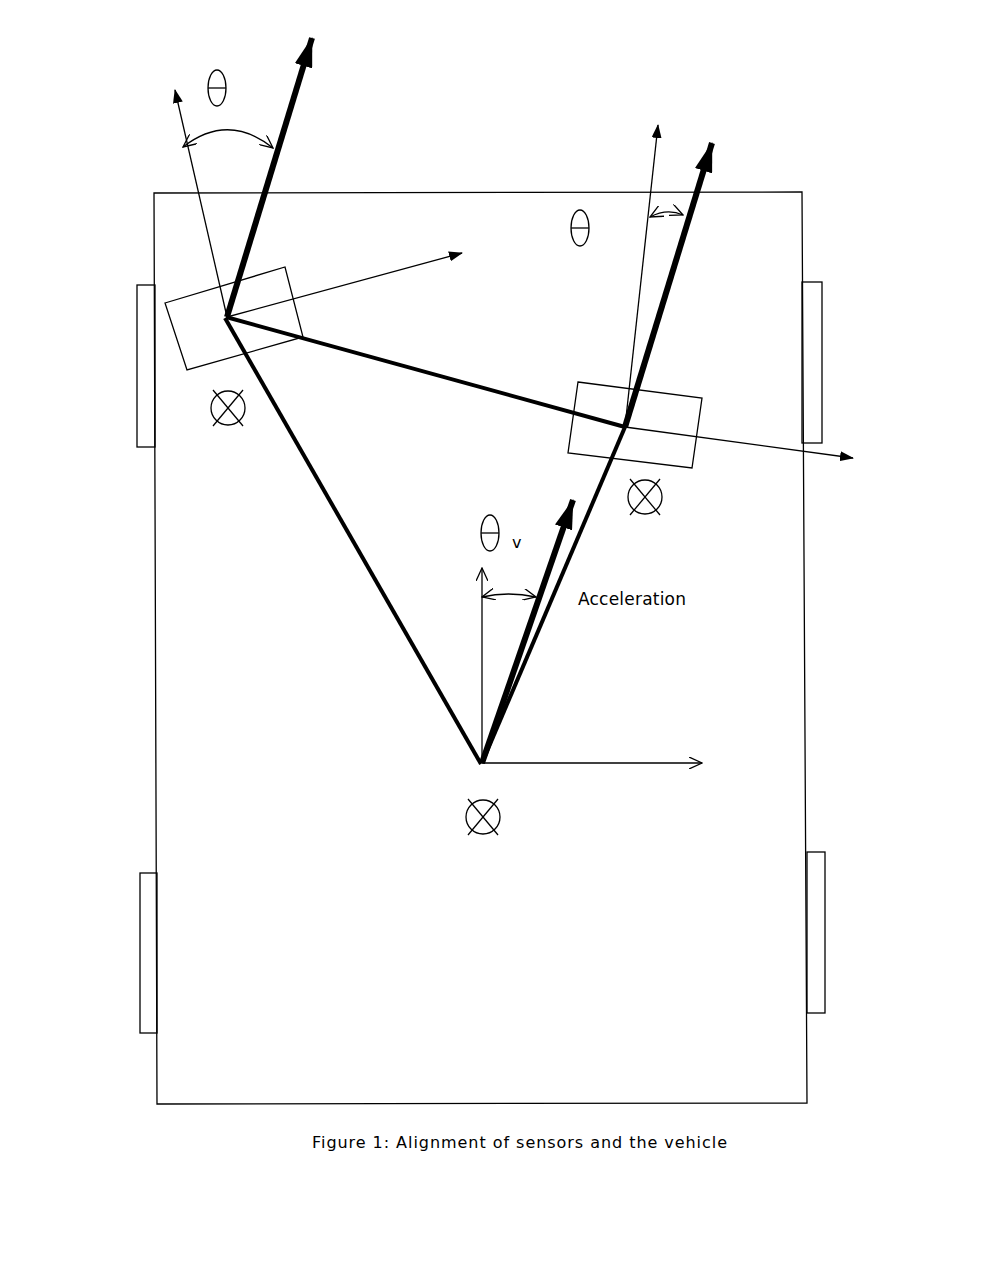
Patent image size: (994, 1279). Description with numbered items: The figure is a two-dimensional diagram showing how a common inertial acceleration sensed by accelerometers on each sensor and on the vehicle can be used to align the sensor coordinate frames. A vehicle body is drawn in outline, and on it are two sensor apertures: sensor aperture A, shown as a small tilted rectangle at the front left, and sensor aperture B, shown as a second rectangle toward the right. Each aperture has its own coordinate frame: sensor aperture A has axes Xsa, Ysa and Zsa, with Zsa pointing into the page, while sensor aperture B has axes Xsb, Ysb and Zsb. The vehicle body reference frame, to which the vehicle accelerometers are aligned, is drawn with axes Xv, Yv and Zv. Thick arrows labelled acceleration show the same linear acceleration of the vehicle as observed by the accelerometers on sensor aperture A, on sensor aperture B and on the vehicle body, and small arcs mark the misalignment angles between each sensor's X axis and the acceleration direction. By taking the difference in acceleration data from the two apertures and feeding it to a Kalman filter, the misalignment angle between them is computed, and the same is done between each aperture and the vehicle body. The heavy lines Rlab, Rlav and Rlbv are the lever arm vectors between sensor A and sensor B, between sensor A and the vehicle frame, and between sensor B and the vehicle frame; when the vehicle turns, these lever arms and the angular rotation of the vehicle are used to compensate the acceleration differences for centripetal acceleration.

The sensor aperture A is at (253, 255).
The sensor aperture B is at (723, 342).
The X axis of sensor aperture A frame Xsa is at (169, 203).
The Y axis of sensor aperture A frame Ysa is at (344, 275).
The Z axis of sensor aperture A frame Zsa is at (227, 431).
The X axis of sensor aperture B frame Xsb is at (631, 276).
The Y axis of sensor aperture B frame Ysb is at (739, 461).
The Z axis of sensor aperture B frame Zsb is at (637, 516).
The X axis of vehicle body reference frame Xv is at (460, 663).
The Y axis of vehicle body reference frame Yv is at (611, 764).
The Z axis of vehicle body reference frame Zv is at (483, 840).
The lever arm vector between sensor A and sensor B Rlab is at (425, 372).
The lever arm vector between sensor A and vehicle body Rlav is at (353, 541).
The lever arm vector between sensor B and vehicle body Rlbv is at (553, 595).